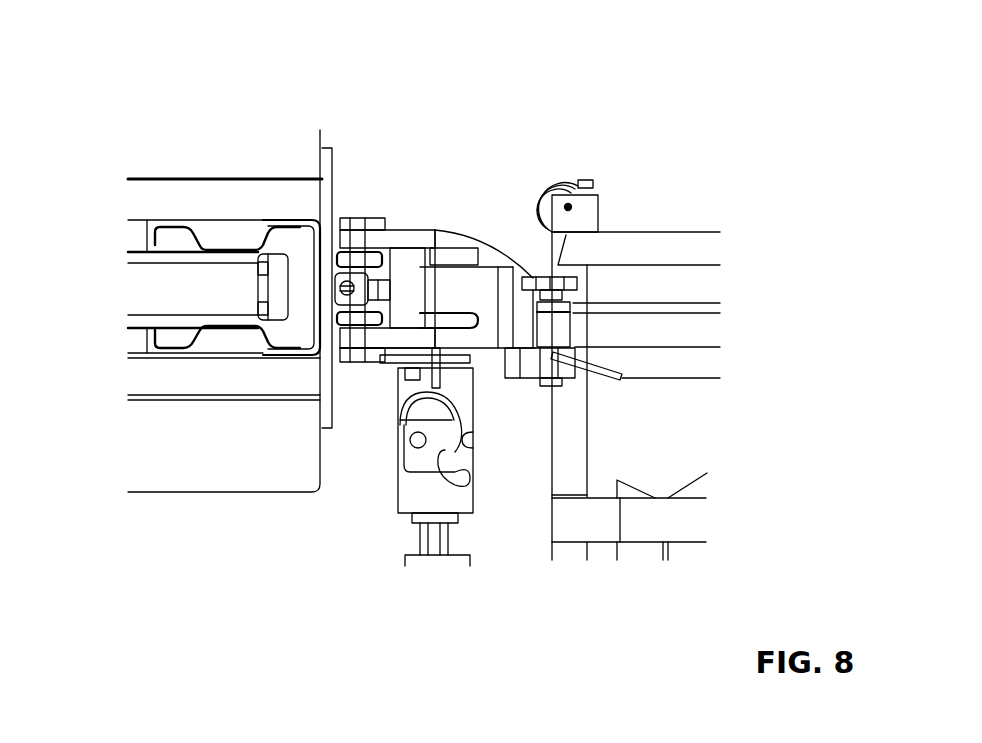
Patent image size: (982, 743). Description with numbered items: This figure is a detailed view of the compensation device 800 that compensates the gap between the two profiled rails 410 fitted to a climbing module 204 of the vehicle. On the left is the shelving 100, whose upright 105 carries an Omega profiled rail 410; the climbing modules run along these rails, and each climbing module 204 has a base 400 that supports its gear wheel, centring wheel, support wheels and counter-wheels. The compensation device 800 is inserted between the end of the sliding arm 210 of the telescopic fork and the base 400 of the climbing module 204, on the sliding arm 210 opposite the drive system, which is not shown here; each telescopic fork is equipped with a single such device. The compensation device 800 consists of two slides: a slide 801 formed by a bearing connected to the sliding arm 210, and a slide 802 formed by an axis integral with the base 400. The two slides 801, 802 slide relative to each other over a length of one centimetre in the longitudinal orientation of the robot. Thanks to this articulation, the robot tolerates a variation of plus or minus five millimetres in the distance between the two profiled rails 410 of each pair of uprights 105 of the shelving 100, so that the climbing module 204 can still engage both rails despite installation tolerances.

The shelving 100 is at (143, 433).
The upright 105 is at (262, 240).
The climbing module 204 is at (442, 163).
The base 400 is at (467, 243).
The profiled rail 410 is at (332, 288).
The sliding arm 210 is at (668, 242).
The compensation device 800 is at (540, 405).
The slide 801 is at (523, 363).
The slide 802 is at (520, 273).